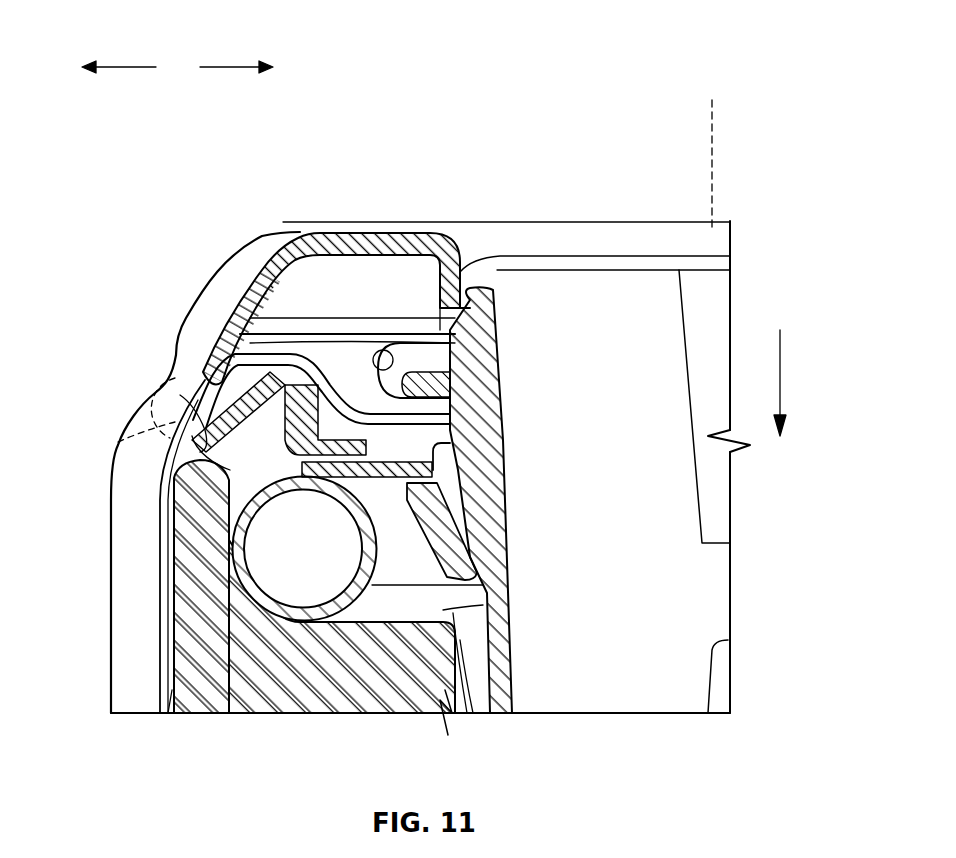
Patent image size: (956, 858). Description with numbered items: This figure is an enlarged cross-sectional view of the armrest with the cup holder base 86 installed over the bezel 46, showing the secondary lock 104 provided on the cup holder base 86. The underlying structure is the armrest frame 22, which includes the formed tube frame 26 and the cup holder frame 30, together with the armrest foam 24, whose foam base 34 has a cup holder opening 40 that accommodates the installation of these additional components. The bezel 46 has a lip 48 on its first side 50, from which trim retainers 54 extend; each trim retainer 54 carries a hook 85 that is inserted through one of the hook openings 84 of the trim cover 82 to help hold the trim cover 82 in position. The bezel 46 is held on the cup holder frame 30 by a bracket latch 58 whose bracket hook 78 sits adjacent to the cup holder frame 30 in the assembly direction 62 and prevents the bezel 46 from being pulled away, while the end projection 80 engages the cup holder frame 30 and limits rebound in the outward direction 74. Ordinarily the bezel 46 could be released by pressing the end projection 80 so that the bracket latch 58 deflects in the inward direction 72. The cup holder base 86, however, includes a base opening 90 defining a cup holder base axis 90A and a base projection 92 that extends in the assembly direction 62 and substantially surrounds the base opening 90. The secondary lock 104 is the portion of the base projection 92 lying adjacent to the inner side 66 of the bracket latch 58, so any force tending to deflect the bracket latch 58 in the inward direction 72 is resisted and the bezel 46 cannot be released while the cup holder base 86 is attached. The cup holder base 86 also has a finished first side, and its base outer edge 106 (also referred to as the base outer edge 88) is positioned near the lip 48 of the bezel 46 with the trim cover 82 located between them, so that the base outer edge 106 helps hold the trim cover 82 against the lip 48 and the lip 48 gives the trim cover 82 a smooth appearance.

The armrest frame 22 is at (160, 508).
The armrest foam 24 is at (170, 668).
The formed tube frame 26 is at (278, 610).
The cup holder frame 30 is at (376, 480).
The foam base 34 is at (200, 690).
The cup holder opening 40 is at (475, 705).
The bezel 46 is at (222, 357).
The lip 48 is at (195, 420).
The first side 50 is at (337, 428).
The trim retainers 54 is at (427, 342).
The bracket latch 58 is at (480, 555).
The assembly direction 62 is at (782, 366).
The inner side 66 is at (463, 520).
The inward direction 72 is at (237, 67).
The outward direction 74 is at (118, 67).
The bracket hook 78 is at (420, 488).
The end projection 80 is at (447, 388).
The trim cover 82 is at (165, 447).
The hook openings 84 is at (383, 352).
The hook 85 is at (440, 395).
The cup holder base 86 is at (558, 219).
The base outer edge 88 is at (307, 238).
The base opening 90 is at (718, 243).
The cup holder base axis 90A is at (712, 160).
The base projection 92 is at (718, 596).
The secondary lock 104 is at (483, 412).
The base outer edge 106 is at (210, 372).